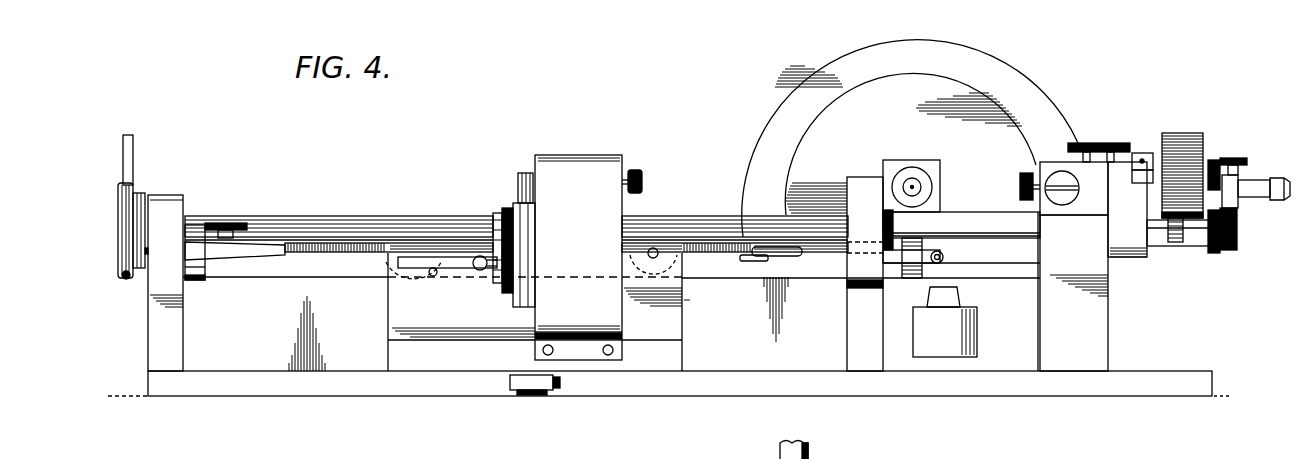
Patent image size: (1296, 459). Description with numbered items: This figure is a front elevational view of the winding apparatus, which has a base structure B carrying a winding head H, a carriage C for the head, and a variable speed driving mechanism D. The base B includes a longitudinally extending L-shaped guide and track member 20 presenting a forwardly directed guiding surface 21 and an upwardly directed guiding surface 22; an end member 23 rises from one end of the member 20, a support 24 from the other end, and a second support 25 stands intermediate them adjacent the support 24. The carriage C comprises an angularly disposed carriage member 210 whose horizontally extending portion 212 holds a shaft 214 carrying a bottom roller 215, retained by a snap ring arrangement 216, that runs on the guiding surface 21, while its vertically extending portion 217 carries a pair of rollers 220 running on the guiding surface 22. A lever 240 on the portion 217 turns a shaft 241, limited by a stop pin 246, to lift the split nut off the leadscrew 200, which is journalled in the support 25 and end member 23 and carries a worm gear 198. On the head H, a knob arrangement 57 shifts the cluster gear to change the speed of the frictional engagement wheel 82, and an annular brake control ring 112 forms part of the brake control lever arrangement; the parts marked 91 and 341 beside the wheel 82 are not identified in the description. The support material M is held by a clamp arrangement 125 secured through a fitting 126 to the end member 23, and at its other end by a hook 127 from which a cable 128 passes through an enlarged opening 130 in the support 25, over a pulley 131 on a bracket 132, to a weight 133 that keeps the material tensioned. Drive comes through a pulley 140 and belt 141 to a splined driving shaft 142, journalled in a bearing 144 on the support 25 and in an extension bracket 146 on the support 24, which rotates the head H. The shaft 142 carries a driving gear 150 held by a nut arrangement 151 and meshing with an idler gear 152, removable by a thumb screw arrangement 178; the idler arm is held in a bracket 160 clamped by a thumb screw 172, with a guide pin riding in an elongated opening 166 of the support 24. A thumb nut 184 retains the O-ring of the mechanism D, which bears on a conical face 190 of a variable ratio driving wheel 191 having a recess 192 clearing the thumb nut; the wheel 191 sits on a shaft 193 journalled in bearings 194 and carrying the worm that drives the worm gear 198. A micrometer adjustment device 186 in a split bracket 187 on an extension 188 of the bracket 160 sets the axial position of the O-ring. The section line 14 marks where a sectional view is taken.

The section line 14 is at (912, 0).
The guide and track member 20 is at (742, 356).
The forwardly directed guiding surface 21 is at (289, 380).
The upwardly directed guiding surface 22 is at (309, 282).
The end member 23 is at (153, 315).
The support 24 is at (1106, 313).
The second support 25 is at (849, 349).
The handle or knob arrangement 57 is at (640, 170).
The frictional engagement wheel 82 is at (528, 173).
The hub 91 is at (514, 308).
The annular brake control ring 112 is at (536, 245).
The clamp arrangement 125 is at (257, 262).
The fitting 126 is at (197, 281).
The hook 127 is at (765, 256).
The cable 128 is at (945, 266).
The enlarged opening 130 is at (852, 258).
The pulley 131 is at (944, 255).
The bracket 132 is at (913, 258).
The weight 133 is at (977, 326).
The pulley 140 is at (131, 193).
The belt 141 is at (133, 143).
The splined driving shaft 142 is at (448, 222).
The bearing 144 is at (886, 223).
The extension bracket 146 is at (1125, 258).
The driving gear 150 is at (1178, 248).
The nut arrangement 151 is at (1233, 250).
The idler gear 152 is at (1183, 133).
The bracket 160 is at (1124, 197).
The elongated opening 166 is at (1140, 153).
The thumb screw 172 is at (1118, 132).
The thumb screw arrangement 178 is at (1212, 160).
The thumb nut 184 is at (1020, 179).
The micrometer adjustment device 186 is at (1265, 180).
The split bracket 187 is at (1243, 205).
The extension 188 is at (1200, 249).
The conical face 190 is at (1024, 68).
The variable ratio driving wheel 191 is at (888, 98).
The recess 192 is at (949, 78).
The shaft 193 is at (935, 174).
The bearings 194 is at (912, 186).
The worm gear 198 is at (917, 280).
The leadscrew 200 is at (745, 258).
The carriage member 210 is at (676, 302).
The horizontally extending portion 212 is at (682, 340).
The shaft 214 is at (535, 396).
The roller 215 is at (556, 388).
The snap ring arrangement 216 is at (513, 387).
The vertically extending portion 217 is at (393, 278).
The rollers 220 is at (416, 230).
The lever 240 is at (408, 269).
The shaft 241 is at (481, 256).
The stop pin 246 is at (433, 277).
The flange 341 is at (500, 282).
The base structure B is at (372, 404).
The carriage C is at (450, 381).
The variable speed driving mechanism D is at (1079, 130).
The winding head H is at (562, 155).
The support material M is at (698, 252).